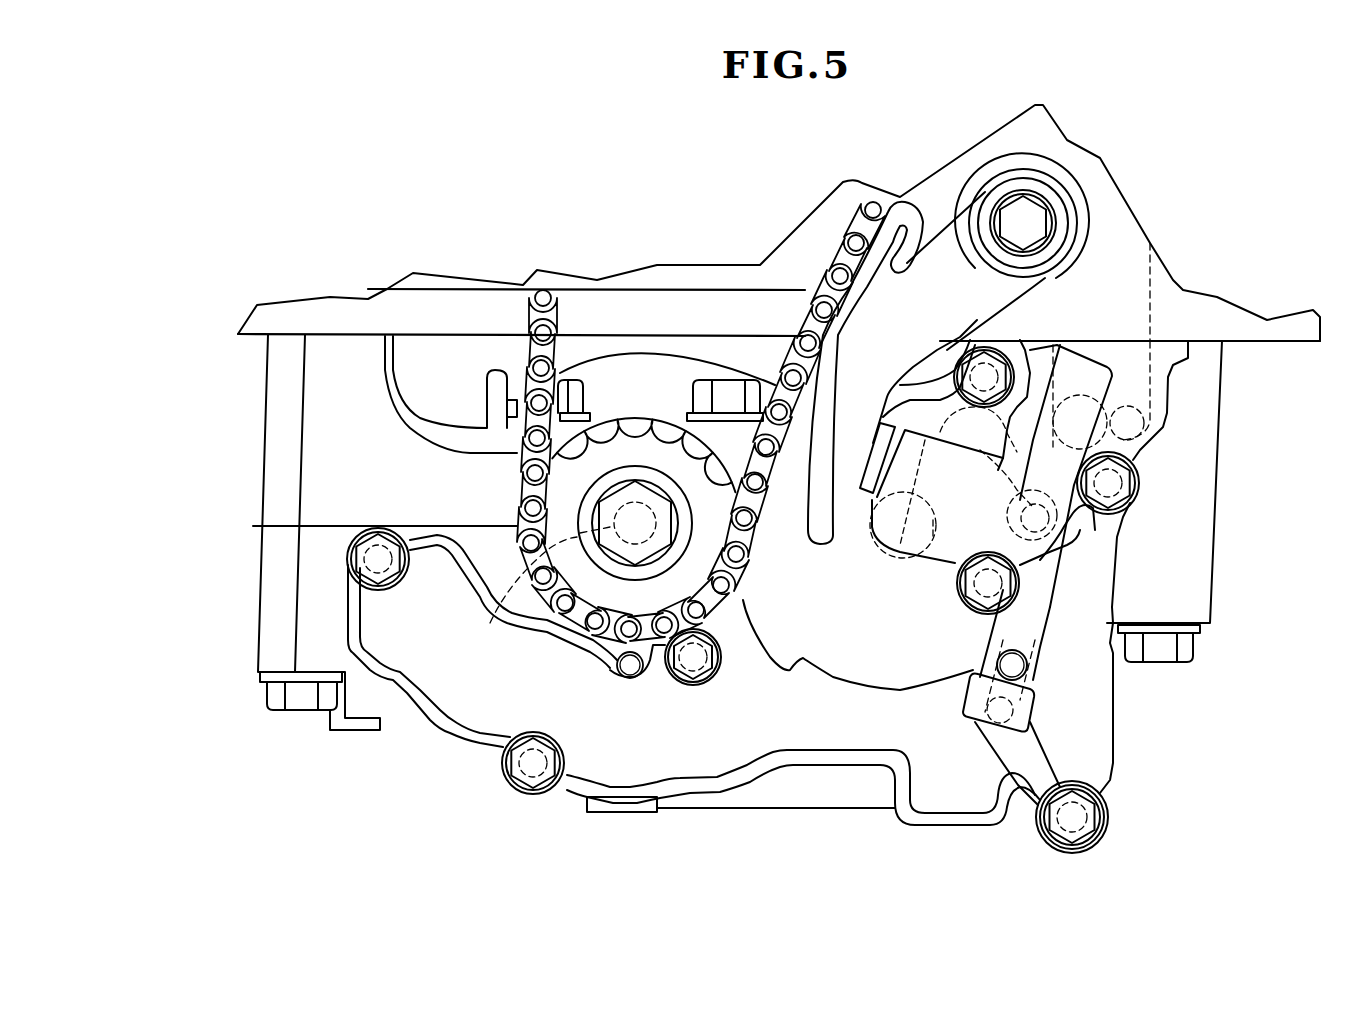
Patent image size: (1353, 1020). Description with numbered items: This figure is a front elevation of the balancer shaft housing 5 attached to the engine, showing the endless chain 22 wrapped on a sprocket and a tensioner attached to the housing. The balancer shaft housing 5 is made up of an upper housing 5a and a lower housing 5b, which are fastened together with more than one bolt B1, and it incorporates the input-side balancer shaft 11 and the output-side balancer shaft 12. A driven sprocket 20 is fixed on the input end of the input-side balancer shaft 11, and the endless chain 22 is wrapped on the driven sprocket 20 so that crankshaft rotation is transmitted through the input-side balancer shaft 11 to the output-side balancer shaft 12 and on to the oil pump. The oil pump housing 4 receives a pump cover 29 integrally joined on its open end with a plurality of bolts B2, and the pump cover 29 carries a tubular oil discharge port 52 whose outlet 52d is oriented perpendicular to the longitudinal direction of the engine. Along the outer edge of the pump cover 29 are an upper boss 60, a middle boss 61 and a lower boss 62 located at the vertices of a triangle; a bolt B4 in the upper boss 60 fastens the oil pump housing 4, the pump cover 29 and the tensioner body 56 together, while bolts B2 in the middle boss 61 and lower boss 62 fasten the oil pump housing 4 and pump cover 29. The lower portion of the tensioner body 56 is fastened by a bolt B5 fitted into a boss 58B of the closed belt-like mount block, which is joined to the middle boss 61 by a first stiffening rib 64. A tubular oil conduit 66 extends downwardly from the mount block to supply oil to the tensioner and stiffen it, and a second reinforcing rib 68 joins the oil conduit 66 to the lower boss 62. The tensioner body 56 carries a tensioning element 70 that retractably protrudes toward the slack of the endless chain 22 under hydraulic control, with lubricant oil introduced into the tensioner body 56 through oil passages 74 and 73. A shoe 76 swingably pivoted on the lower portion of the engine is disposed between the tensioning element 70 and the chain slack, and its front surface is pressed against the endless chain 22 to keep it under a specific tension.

The oil pump housing 4 is at (1124, 744).
The balancer shaft housing 5 is at (178, 485).
The upper housing 5a is at (313, 470).
The lower housing 5b is at (313, 577).
The input-side balancer shaft 11 is at (506, 641).
The output-side balancer shaft 12 is at (890, 540).
The driven sprocket 20 is at (620, 600).
The endless chain 22 is at (763, 503).
The pump cover 29 is at (820, 727).
The oil discharge port 52 is at (1110, 440).
The outlet 52d is at (1167, 367).
The tensioner body 56 is at (1107, 372).
The boss 58B is at (1062, 590).
The upper boss 60 is at (993, 347).
The middle boss 61 is at (1140, 490).
The lower boss 62 is at (1110, 810).
The first stiffening rib 64 is at (1080, 515).
The tubular oil conduit 66 is at (1057, 613).
The second reinforcing rib 68 is at (1030, 755).
The tensioning element 70 is at (880, 500).
The oil passage 73 is at (1085, 613).
The oil passage 74 is at (1029, 662).
The shoe 76 is at (960, 227).
The bolt B1 is at (302, 710).
The bolt B2 is at (380, 548).
The bolt B4 is at (1000, 352).
The bolt B5 is at (960, 608).